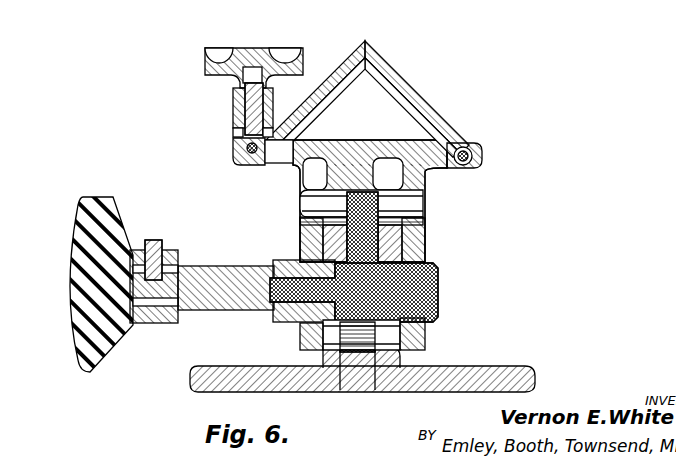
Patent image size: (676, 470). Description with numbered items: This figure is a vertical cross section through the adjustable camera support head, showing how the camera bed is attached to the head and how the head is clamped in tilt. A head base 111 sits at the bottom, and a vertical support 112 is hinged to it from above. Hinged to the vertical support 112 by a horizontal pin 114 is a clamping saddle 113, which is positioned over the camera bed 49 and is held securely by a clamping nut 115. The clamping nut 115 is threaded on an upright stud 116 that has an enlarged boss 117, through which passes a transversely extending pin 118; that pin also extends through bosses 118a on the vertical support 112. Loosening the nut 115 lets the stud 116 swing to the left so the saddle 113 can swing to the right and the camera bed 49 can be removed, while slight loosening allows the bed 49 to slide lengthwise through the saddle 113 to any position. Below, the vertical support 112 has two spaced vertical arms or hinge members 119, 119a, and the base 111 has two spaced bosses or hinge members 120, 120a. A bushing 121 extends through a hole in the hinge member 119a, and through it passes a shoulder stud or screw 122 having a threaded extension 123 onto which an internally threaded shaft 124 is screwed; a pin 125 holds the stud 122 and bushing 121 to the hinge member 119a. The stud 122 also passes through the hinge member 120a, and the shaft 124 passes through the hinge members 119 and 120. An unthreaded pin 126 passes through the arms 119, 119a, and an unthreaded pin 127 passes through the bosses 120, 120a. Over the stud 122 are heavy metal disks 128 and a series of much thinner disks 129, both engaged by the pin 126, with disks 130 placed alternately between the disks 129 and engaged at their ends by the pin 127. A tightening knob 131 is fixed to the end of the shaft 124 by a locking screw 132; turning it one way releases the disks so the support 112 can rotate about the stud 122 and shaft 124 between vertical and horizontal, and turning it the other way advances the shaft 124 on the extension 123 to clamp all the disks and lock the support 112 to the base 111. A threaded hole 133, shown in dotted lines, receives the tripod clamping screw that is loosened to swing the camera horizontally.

The camera bed 49 is at (401, 103).
The head base 111 is at (198, 377).
The vertical support 112 is at (427, 172).
The clamping saddle 113 is at (421, 96).
The horizontal pin 114 is at (472, 157).
The clamping nut 115 is at (271, 39).
The upright stud 116 is at (244, 104).
The enlarged boss 117 is at (243, 162).
The transversely extending pin 118 is at (247, 148).
The bosses 118a is at (280, 163).
The vertical arm or hinge member 119 is at (306, 237).
The vertical arm or hinge member 119a is at (420, 240).
The boss or hinge member 120 is at (330, 249).
The boss or hinge member 120a is at (396, 255).
The bushing 121 is at (426, 324).
The shoulder stud or screw 122 is at (439, 285).
The threaded extension 123 is at (293, 301).
The internally threaded shaft 124 is at (217, 309).
The pin 125 is at (413, 293).
The unthreaded pin 126 is at (312, 201).
The unthreaded pin 127 is at (336, 356).
The metal disks 128 is at (320, 221).
The disks 129 is at (359, 207).
The disks 130 is at (376, 352).
The tightening knob 131 is at (76, 248).
The locking screw 132 is at (156, 241).
The threaded hole 133 is at (361, 391).